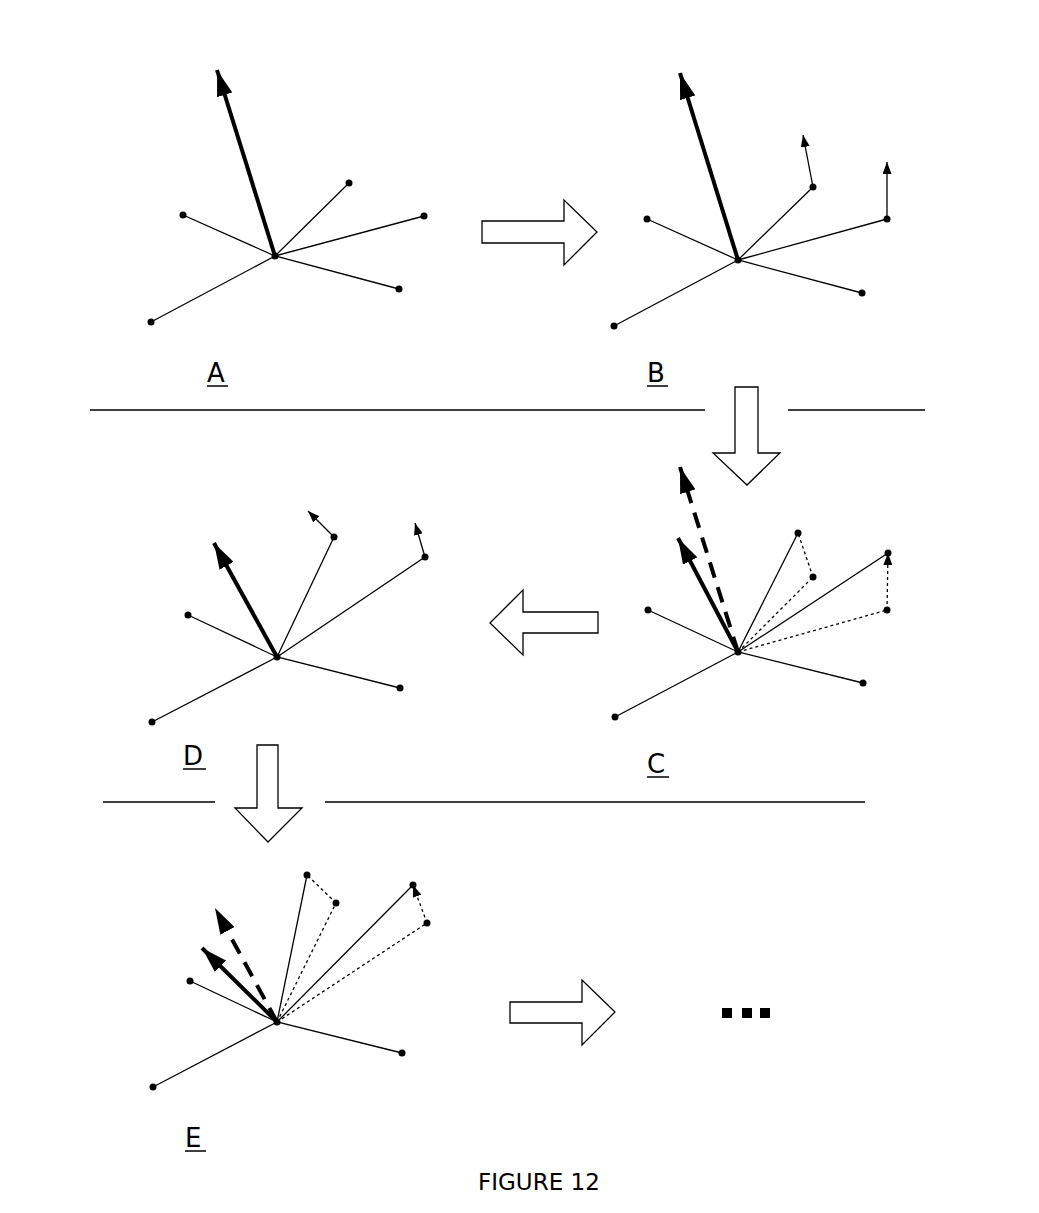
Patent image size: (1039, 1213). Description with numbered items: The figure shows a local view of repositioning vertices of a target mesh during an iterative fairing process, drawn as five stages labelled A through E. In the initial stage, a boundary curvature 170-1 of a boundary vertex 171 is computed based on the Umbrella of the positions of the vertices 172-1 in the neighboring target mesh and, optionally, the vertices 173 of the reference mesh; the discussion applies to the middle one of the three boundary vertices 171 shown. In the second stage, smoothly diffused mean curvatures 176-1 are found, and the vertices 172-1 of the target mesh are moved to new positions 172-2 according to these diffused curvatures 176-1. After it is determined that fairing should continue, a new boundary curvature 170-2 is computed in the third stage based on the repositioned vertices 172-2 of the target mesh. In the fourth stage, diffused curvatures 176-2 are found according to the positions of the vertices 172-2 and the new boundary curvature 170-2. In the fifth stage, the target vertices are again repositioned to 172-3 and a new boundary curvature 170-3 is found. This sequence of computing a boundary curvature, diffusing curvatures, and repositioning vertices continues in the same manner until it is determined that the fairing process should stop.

The boundary curvature 170-1 is at (242, 112).
The new boundary curvature 170-2 is at (690, 576).
The new boundary curvature 170-3 is at (197, 955).
The boundary vertex 171 is at (183, 222).
The vertices 172-1 is at (424, 207).
The new positions 172-2 is at (886, 552).
The repositioned target vertices 172-3 is at (400, 887).
The vertices of reference mesh 173 is at (145, 315).
The smoothly diffused mean curvatures 176-1 is at (887, 153).
The diffused curvatures 176-2 is at (408, 517).